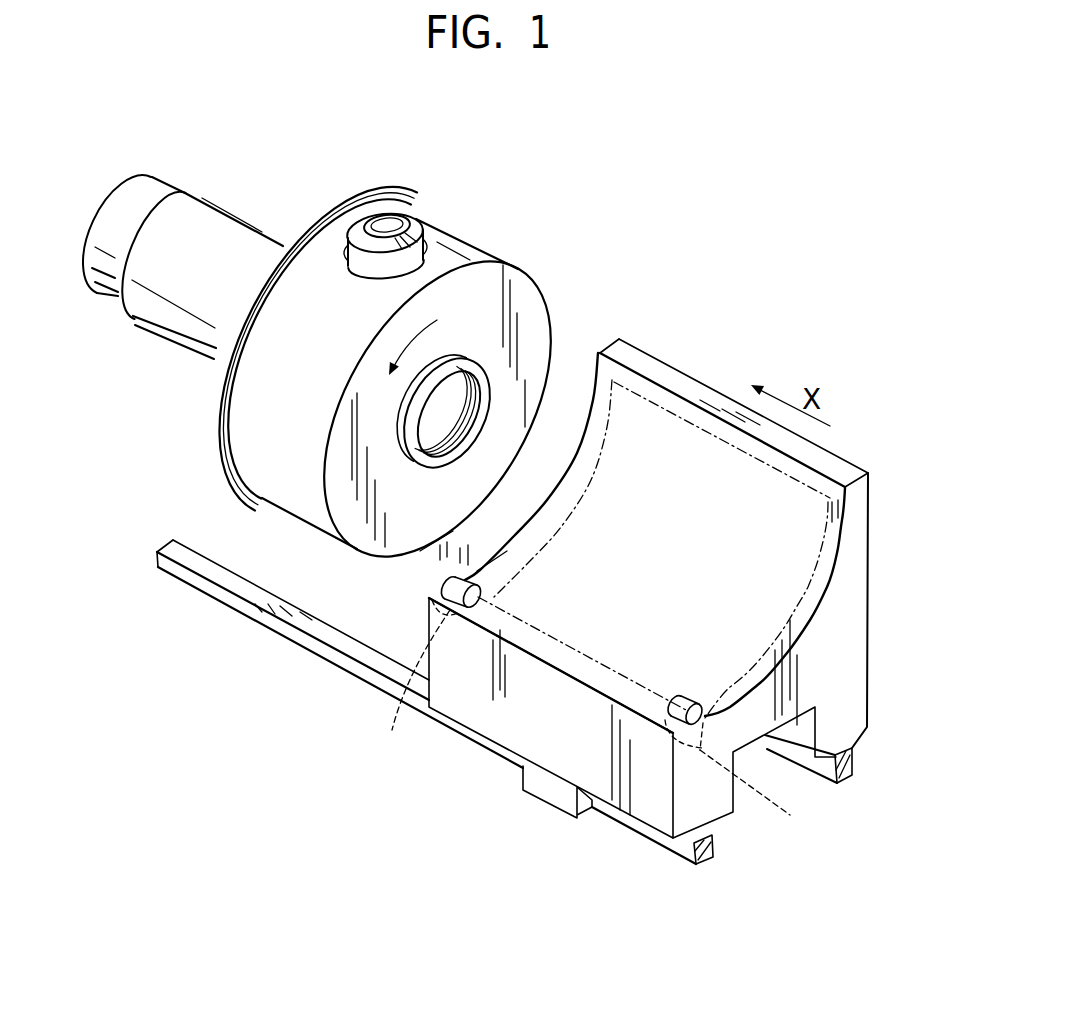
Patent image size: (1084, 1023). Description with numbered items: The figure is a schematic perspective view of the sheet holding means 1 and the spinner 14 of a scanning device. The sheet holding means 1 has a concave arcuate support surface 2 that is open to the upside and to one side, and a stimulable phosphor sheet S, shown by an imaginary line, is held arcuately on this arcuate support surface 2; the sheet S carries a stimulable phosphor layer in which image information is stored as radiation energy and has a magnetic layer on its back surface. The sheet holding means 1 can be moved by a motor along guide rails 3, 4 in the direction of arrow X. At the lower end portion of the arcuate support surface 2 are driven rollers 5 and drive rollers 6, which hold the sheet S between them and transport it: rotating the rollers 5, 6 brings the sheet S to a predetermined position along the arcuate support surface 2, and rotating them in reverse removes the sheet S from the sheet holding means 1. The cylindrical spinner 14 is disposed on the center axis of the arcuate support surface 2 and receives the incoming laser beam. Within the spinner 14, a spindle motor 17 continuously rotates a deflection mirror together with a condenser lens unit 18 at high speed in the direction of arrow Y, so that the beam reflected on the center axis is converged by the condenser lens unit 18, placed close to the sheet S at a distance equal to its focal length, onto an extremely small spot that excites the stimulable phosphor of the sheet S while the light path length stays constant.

The sheet holding means 1 is at (876, 556).
The arcuate support surface 2 is at (830, 480).
The guide rail 3 is at (713, 851).
The guide rail 4 is at (852, 772).
The driven rollers 5 is at (594, 718).
The drive rollers 6 is at (450, 582).
The spinner 14 is at (528, 313).
The spindle motor 17 is at (230, 232).
The condenser lens unit 18 is at (403, 214).
The stimulable phosphor sheet S is at (762, 580).